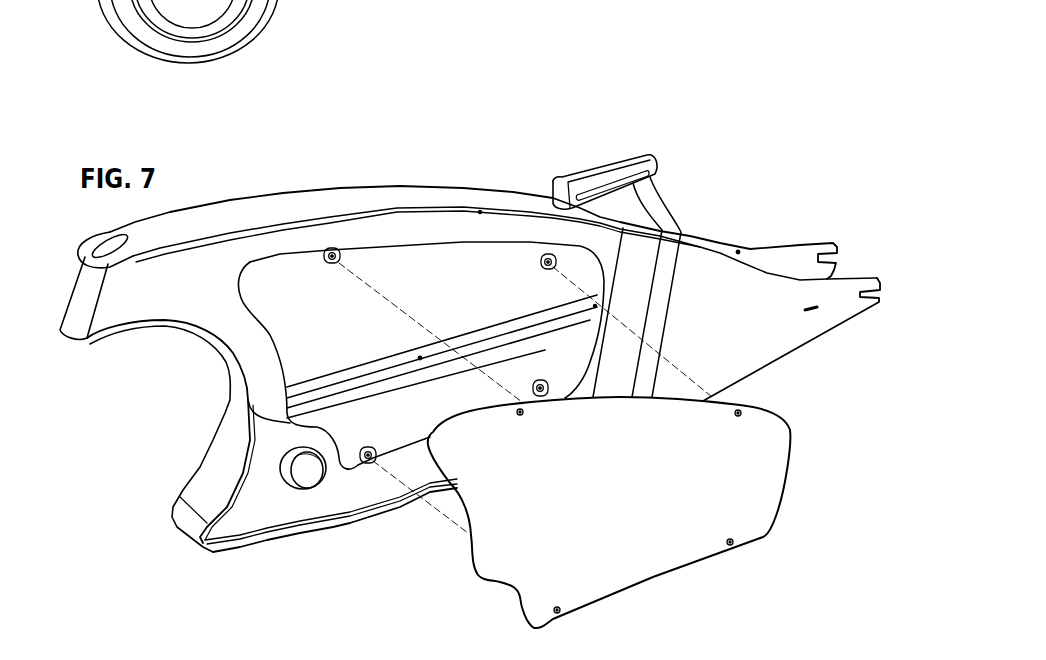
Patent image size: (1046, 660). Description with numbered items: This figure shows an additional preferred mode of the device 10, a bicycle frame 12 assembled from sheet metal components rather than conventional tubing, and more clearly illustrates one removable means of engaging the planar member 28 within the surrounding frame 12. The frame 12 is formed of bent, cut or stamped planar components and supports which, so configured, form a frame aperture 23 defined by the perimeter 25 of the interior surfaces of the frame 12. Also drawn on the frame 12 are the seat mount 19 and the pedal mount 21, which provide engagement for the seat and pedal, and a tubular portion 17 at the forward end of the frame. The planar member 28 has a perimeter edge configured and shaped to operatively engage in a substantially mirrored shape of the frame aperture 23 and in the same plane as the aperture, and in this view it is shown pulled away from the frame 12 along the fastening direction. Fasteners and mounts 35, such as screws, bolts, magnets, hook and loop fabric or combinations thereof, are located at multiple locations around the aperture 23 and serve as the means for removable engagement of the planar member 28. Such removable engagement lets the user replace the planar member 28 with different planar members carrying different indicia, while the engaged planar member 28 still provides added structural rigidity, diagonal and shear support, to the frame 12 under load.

The device 10 is at (752, 80).
The bicycle frame 12 is at (288, 198).
The tube 17 is at (62, 330).
The seat mount 19 is at (634, 157).
The pedal mount 21 is at (303, 472).
The frame aperture 23 is at (457, 270).
The perimeter 25 is at (262, 327).
The planar member 28 is at (772, 467).
The fasteners and mounts 35 is at (337, 250).